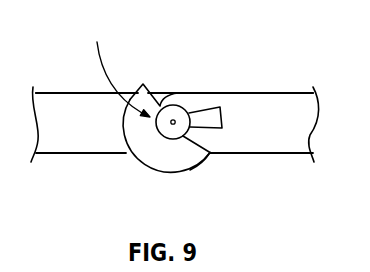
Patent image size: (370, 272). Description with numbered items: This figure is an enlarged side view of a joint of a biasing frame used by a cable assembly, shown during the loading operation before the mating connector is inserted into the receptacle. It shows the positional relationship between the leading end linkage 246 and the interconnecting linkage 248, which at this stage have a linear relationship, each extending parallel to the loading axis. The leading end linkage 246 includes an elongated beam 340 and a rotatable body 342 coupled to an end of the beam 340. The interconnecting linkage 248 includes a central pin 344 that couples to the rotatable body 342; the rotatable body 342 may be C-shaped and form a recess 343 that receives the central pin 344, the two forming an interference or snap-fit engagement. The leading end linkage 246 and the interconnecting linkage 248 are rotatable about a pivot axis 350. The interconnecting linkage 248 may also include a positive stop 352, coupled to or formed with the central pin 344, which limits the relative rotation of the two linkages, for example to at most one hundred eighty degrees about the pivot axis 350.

The leading end linkage 246 is at (63, 93).
The interconnecting linkage 248 is at (272, 94).
The elongated beam 340 is at (67, 151).
The rotatable body 342 is at (159, 157).
The recess 343 is at (114, 67).
The central pin 344 is at (176, 138).
The pivot axis 350 is at (173, 120).
The positive stop 352 is at (207, 111).